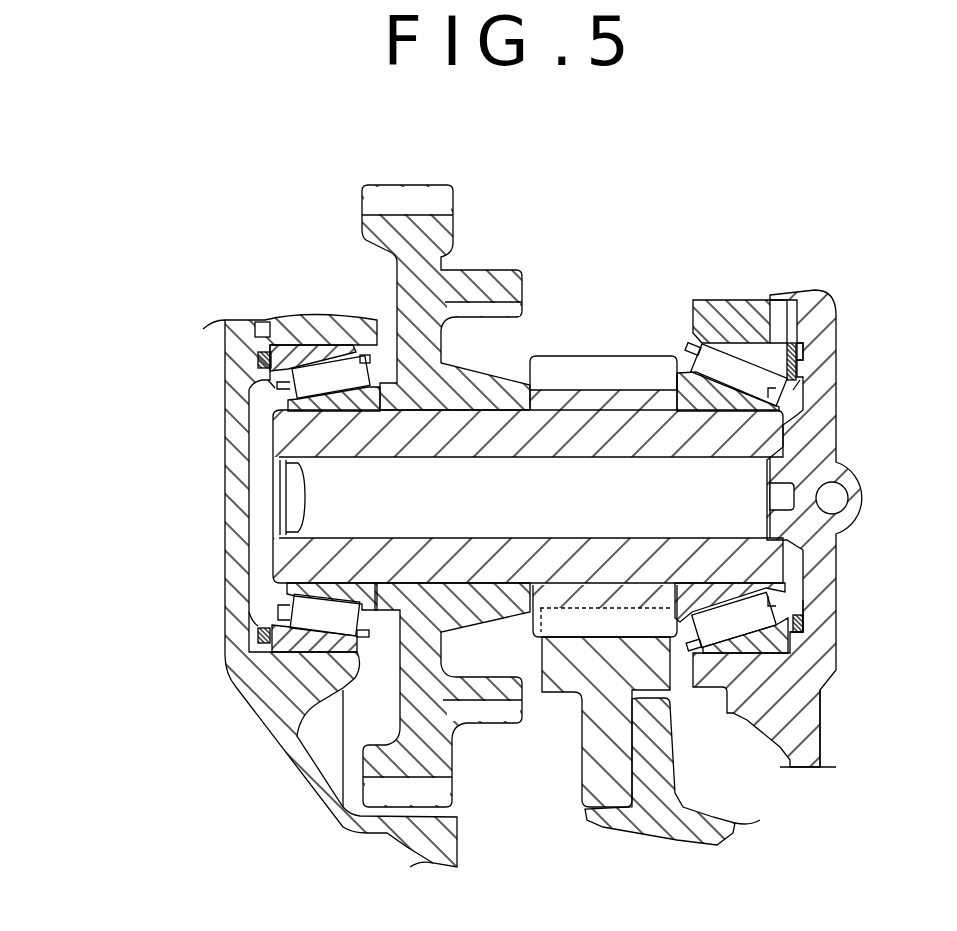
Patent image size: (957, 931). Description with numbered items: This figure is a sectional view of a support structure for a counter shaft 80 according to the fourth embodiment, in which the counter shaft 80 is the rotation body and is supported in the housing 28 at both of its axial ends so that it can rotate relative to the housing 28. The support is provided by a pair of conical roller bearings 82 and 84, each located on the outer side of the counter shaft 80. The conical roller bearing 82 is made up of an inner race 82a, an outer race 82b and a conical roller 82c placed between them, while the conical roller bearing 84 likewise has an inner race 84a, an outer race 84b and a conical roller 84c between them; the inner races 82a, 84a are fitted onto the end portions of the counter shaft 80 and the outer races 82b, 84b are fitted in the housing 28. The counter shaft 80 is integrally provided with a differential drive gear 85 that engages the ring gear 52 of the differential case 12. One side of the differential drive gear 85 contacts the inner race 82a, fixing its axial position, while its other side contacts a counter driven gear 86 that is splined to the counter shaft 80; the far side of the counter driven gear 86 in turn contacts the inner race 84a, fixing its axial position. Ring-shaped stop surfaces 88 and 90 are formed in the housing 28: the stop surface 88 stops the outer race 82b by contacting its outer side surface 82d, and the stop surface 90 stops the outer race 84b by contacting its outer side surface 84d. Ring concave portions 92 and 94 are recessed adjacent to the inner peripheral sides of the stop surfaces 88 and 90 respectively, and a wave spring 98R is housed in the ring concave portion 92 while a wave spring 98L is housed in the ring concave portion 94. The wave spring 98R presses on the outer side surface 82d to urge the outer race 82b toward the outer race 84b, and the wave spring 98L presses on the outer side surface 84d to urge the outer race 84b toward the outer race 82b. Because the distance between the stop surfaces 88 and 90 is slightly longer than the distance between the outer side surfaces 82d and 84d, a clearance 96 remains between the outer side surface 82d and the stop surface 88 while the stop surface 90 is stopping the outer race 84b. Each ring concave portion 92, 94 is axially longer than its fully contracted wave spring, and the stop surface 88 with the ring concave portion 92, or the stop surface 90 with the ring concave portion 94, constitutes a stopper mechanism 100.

The differential case 12 is at (660, 817).
The housing 28 is at (807, 703).
The ring gear 52 is at (600, 750).
The counter shaft 80 is at (502, 417).
The conical roller bearing 82 is at (780, 339).
The inner race 82a is at (789, 428).
The outer race 82b is at (773, 360).
The conical roller 82c is at (712, 338).
The outer side surface 82d is at (796, 343).
The conical roller bearing 84 is at (281, 340).
The inner race 84a is at (373, 400).
The outer race 84b is at (320, 380).
The conical roller 84c is at (312, 348).
The outer side surface 84d is at (264, 352).
The differential drive gear 85 is at (607, 378).
The counter driven gear 86 is at (419, 200).
The stop surface 88 is at (797, 355).
The stop surface 90 is at (237, 690).
The ring concave portion 92 is at (803, 603).
The ring concave portion 94 is at (258, 622).
The clearance 96 is at (800, 625).
The wave spring 98L is at (266, 622).
The wave spring 98R is at (792, 607).
The stopper mechanism 100 is at (258, 383).